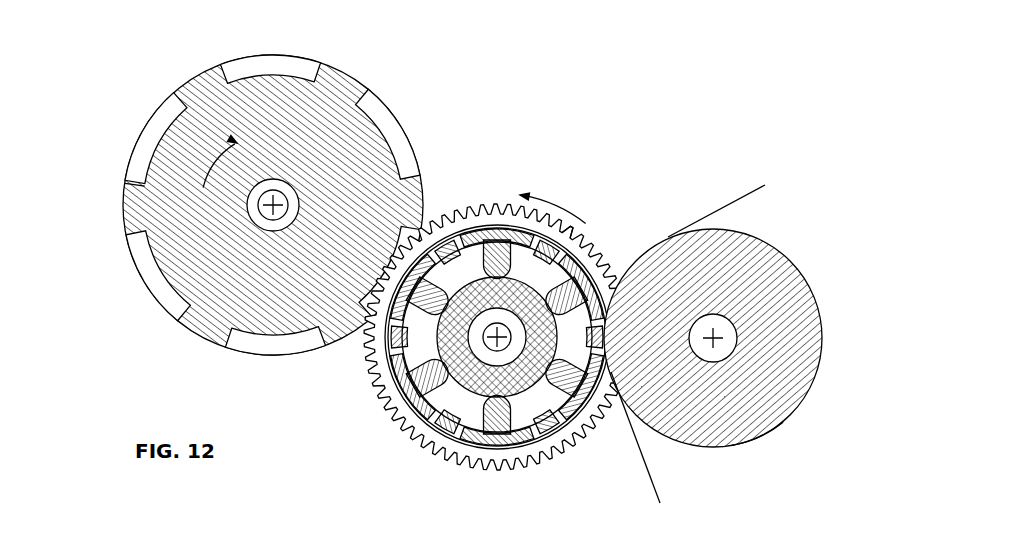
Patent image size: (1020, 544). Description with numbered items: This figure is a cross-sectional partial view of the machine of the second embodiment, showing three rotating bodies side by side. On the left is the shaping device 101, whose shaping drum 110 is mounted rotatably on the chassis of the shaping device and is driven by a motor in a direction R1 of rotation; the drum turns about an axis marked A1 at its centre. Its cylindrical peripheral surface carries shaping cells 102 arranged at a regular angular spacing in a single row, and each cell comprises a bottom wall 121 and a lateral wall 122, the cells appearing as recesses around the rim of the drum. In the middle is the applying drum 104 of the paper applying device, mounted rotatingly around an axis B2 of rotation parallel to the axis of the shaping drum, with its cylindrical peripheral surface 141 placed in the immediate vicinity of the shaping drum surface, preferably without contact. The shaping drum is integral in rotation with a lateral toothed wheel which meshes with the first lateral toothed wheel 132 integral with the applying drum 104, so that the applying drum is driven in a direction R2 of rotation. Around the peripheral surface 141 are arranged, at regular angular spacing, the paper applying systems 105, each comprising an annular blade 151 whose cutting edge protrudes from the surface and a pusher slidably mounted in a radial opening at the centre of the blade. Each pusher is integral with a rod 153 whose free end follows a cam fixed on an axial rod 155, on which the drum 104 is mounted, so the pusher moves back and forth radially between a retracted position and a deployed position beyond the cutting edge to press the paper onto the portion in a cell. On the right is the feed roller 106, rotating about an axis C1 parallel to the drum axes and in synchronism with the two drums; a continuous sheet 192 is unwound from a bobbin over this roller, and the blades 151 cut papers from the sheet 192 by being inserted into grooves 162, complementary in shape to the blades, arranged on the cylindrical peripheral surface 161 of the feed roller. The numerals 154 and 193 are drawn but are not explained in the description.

The shaping device 101 is at (350, 63).
The shaping cells 102 is at (137, 133).
The shaping drum 110 is at (373, 86).
The bottom wall 121 is at (168, 128).
The lateral wall 122 is at (127, 172).
The applying drum 104 is at (483, 217).
The paper applying system 105 is at (489, 460).
The first lateral toothed wheel 132 is at (598, 262).
The cylindrical peripheral surface 141 is at (447, 243).
The blade 151 is at (530, 448).
The rod 153 is at (478, 420).
The inner ring 154 is at (465, 375).
The axial rod 155 is at (533, 383).
The feed roller 106 is at (784, 241).
The cylindrical peripheral surface 161 is at (812, 378).
The grooves 162 is at (758, 433).
The continuous sheet 192 is at (658, 484).
The sheet path upstream 193 is at (733, 202).
The axis of first rotary body A1 is at (273, 207).
The axis of rotation B2 is at (488, 340).
The axis of rotation C1 is at (720, 335).
The direction of rotation R1 is at (213, 152).
The direction of rotation R2 is at (553, 196).